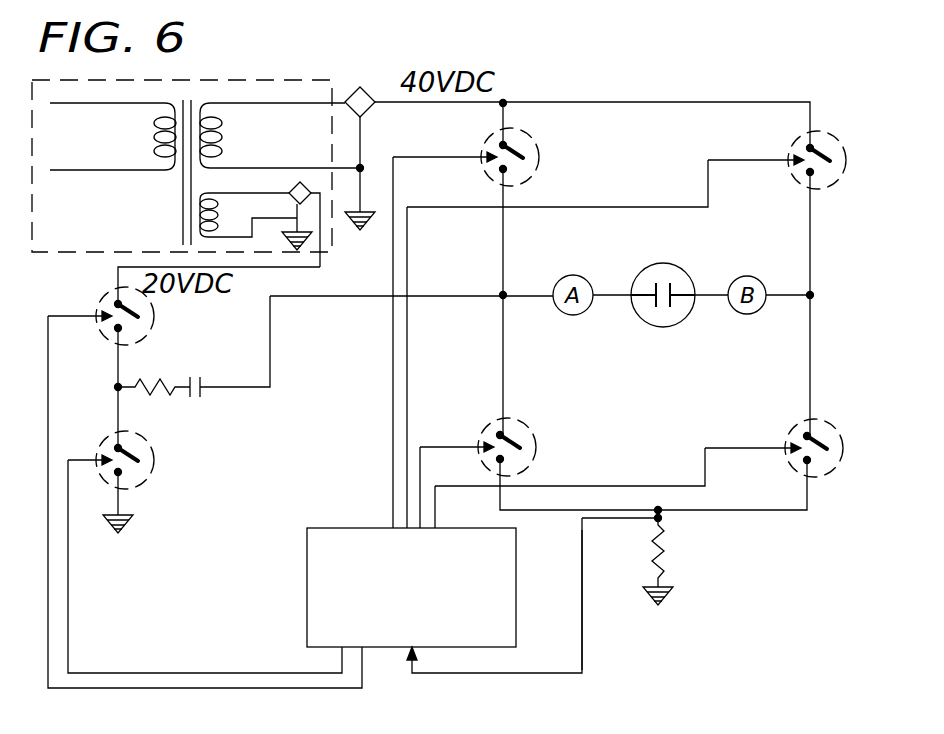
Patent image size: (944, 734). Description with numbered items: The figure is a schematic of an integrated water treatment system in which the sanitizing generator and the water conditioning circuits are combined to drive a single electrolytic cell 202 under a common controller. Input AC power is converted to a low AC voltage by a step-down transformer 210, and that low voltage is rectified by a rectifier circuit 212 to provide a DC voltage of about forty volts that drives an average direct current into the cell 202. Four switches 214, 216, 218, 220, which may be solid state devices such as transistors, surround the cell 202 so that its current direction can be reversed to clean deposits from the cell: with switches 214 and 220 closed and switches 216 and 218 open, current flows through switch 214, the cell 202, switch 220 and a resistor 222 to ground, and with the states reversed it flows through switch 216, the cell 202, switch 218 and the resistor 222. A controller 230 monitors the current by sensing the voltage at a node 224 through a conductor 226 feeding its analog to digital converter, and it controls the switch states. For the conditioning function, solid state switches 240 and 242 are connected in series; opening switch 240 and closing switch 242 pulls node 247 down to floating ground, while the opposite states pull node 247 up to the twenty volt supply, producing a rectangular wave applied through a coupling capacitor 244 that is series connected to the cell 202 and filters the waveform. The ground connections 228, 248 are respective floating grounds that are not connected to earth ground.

The cell 202 is at (668, 327).
The step-down transformer 210 is at (88, 255).
The rectifier circuit 212 is at (350, 90).
The switch 214 is at (535, 145).
The switch 216 is at (836, 145).
The switch 218 is at (522, 425).
The switch 220 is at (828, 425).
The resistor 222 is at (665, 560).
The node 224 is at (662, 519).
The conductor 226 is at (583, 625).
The ground connection 228 is at (358, 236).
The controller 230 is at (307, 568).
The solid state switch 240 is at (154, 308).
The solid state switch 242 is at (154, 456).
The coupling capacitor 244 is at (205, 391).
The node 247 is at (116, 386).
The ground connection 248 is at (125, 526).